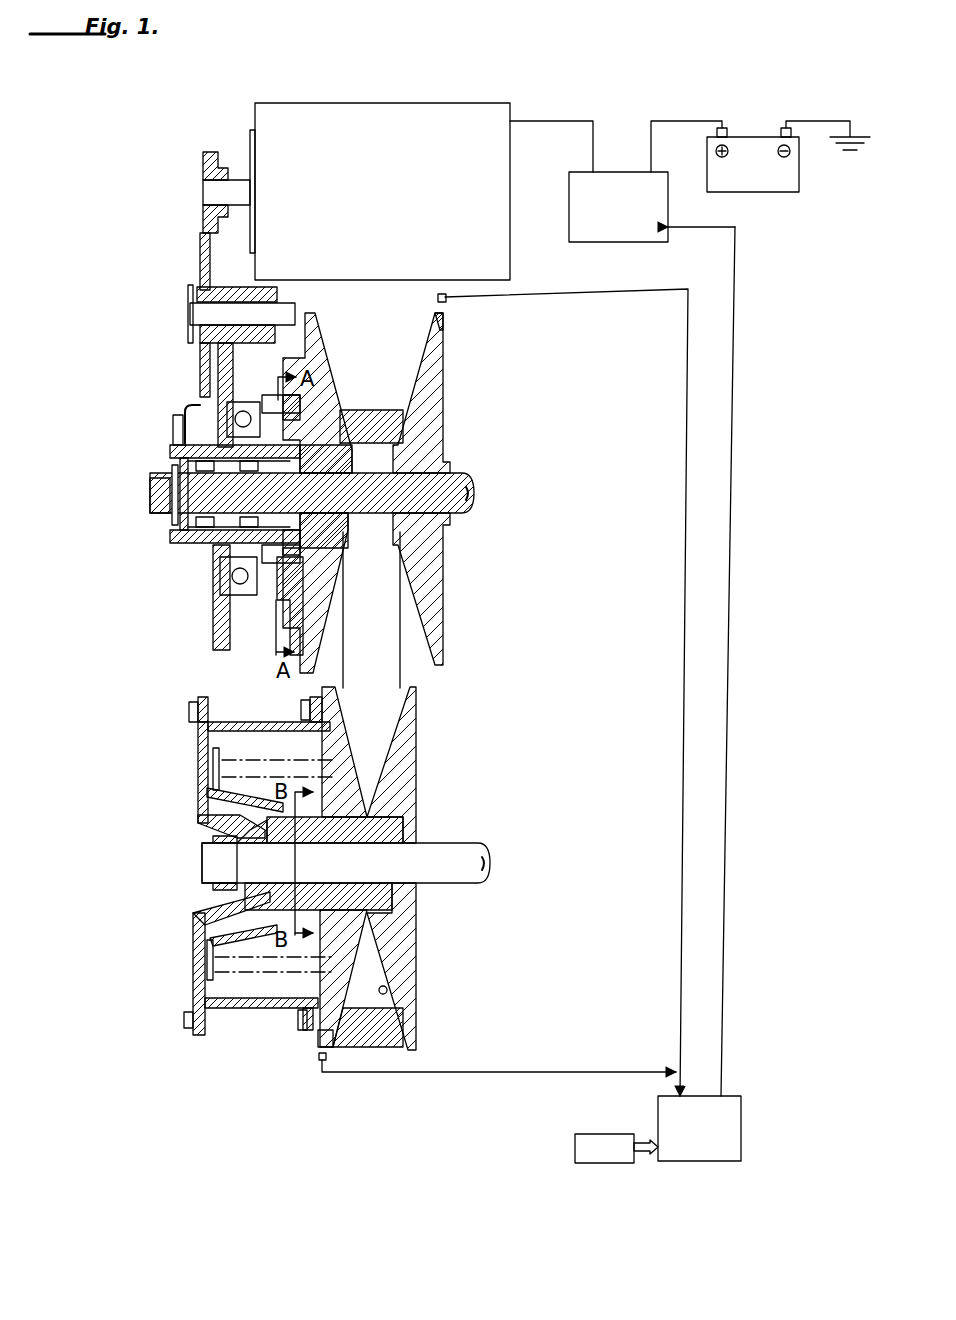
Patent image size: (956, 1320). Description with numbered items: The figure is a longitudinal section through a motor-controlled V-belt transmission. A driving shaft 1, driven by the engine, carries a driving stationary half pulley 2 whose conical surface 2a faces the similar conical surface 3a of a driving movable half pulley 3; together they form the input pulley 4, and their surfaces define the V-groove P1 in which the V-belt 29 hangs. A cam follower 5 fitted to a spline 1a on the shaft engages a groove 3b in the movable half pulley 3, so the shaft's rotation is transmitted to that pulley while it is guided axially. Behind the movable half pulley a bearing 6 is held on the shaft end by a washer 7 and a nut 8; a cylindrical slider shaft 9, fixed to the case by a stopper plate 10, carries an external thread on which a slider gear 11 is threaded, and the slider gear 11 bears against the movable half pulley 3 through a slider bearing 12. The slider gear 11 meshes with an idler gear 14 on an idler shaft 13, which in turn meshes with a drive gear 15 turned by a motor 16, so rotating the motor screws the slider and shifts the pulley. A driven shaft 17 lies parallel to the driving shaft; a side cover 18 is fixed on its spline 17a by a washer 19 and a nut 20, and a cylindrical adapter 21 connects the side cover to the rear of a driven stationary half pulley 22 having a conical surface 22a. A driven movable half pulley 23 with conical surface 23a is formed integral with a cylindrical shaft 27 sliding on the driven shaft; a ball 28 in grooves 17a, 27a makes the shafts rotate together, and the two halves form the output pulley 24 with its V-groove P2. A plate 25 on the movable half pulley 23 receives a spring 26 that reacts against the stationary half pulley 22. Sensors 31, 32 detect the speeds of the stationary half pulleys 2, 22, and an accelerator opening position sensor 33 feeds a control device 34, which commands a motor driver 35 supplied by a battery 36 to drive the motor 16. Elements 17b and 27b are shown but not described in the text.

The driving shaft 1 is at (474, 482).
The spline 1a is at (470, 503).
The driving stationary half pulley 2 is at (440, 418).
The conical surface 2a is at (442, 350).
The driving movable half pulley 3 is at (338, 385).
The conical surface 3a is at (318, 346).
The groove 3b is at (278, 410).
The input pulley 4 is at (460, 440).
The cam follower 5 is at (290, 618).
The bearing 6 is at (175, 543).
The washer 7 is at (172, 470).
The nut 8 is at (150, 490).
The slider shaft 9 is at (183, 406).
The stopper plate 10 is at (173, 420).
The slider gear 11 is at (218, 375).
The slider bearing 12 is at (222, 577).
The idler shaft 13 is at (190, 314).
The idler gear 14 is at (200, 250).
The drive gear 15 is at (203, 162).
The motor 16 is at (428, 112).
The driven shaft 17 is at (488, 855).
The spline 17a is at (486, 872).
The plate 17b is at (205, 822).
The side cover 18 is at (195, 990).
The washer 19 is at (235, 840).
The nut 20 is at (210, 897).
The adapter 21 is at (250, 1008).
The driven stationary half pulley 22 is at (320, 1042).
The conical surface 22a is at (350, 1000).
The driven movable half pulley 23 is at (398, 760).
The conical surface 23a is at (388, 990).
The output pulley 24 is at (440, 812).
The plate 25 is at (200, 950).
The spring 26 is at (205, 725).
The cylindrical shaft 27 is at (418, 797).
The ball groove 27a is at (405, 895).
The cam follower 27b is at (207, 795).
The ball 28 is at (398, 905).
The V-belt 29 is at (378, 410).
The sensor 31 is at (448, 300).
The sensor 32 is at (320, 1060).
The accelerator opening position sensor 33 is at (575, 1146).
The control device 34 is at (742, 1130).
The motor driver 35 is at (642, 244).
The battery 36 is at (778, 193).
The V-groove P1 is at (402, 386).
The V-groove P2 is at (372, 955).